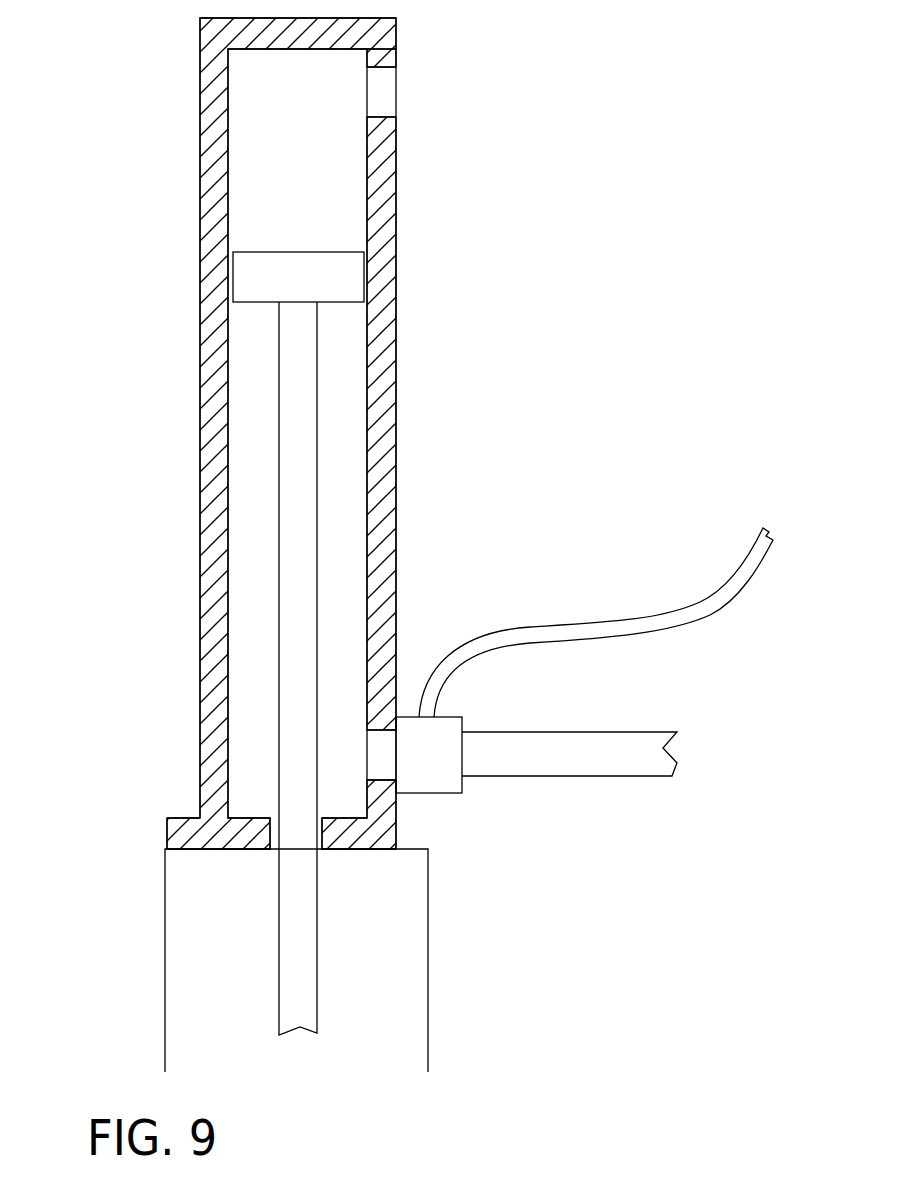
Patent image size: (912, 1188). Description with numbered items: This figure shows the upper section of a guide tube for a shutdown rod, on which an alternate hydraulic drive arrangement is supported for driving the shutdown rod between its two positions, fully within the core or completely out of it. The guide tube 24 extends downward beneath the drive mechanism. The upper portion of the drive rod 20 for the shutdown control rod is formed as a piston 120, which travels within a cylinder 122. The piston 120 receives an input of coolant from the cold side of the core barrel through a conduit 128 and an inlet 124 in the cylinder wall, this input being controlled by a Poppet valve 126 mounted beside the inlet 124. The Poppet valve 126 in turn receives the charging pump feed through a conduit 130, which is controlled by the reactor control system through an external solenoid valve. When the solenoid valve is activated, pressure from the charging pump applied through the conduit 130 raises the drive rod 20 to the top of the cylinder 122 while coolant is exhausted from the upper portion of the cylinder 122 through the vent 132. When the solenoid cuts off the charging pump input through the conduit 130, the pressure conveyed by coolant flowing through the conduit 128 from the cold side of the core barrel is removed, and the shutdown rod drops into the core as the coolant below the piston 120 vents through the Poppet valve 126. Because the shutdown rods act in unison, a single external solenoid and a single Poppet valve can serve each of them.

The drive rod 20 is at (315, 545).
The base 24 is at (165, 955).
The piston 120 is at (353, 283).
The cylinder 122 is at (394, 425).
The inlet 124 is at (382, 733).
The Poppet valve 126 is at (443, 788).
The conduit 128 is at (582, 732).
The conduit 130 is at (587, 625).
The vent 132 is at (392, 83).